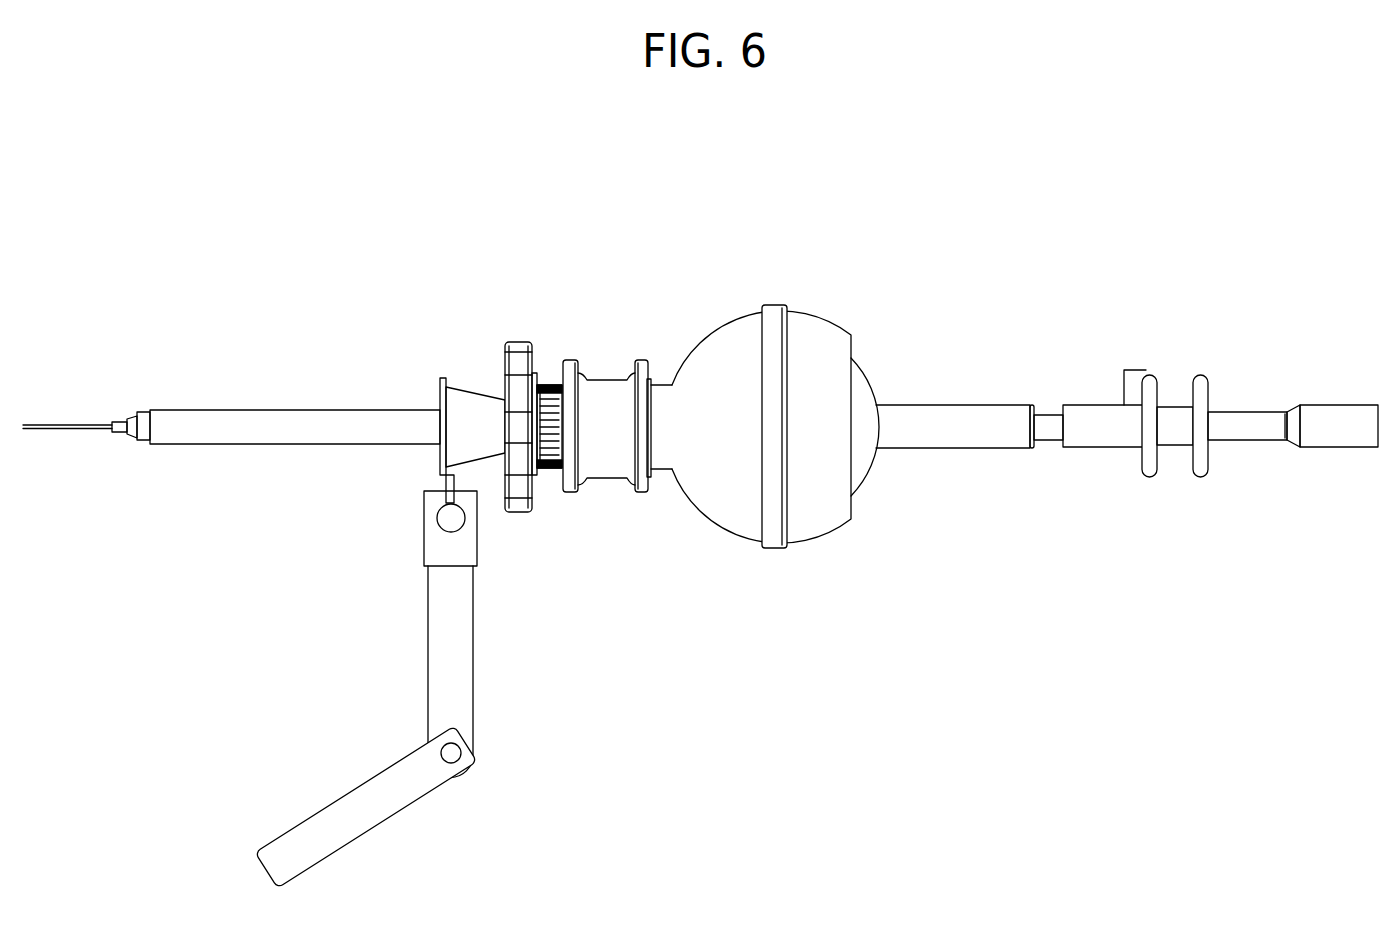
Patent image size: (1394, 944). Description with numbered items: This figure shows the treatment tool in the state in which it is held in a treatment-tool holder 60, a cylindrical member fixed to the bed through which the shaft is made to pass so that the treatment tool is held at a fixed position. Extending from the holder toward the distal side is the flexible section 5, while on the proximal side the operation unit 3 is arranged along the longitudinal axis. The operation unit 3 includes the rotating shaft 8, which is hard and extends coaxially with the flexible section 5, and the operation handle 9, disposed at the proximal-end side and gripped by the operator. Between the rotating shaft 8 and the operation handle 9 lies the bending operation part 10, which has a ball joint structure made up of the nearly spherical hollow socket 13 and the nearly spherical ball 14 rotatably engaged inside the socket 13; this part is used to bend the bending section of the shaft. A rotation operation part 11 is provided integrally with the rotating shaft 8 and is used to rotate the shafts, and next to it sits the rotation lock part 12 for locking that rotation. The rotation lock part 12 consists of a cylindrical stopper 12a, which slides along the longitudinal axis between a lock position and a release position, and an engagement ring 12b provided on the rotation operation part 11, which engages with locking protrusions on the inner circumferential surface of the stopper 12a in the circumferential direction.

The operation unit 3 is at (1127, 325).
The flexible section 5 is at (70, 421).
The rotating shaft 8 is at (270, 410).
The operation handle 9 is at (1237, 408).
The bending operation part 10 is at (793, 379).
The rotation operation part 11 is at (518, 342).
The rotation lock part 12 is at (583, 338).
The stopper 12a is at (605, 380).
The engagement ring 12b is at (547, 385).
The socket 13 is at (803, 308).
The ball 14 is at (866, 385).
The treatment-tool holder 60 is at (465, 390).